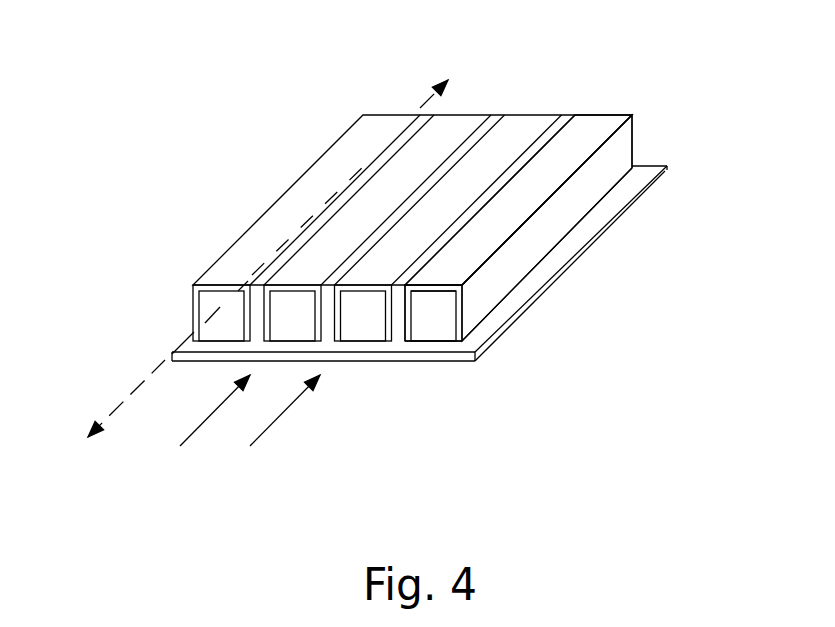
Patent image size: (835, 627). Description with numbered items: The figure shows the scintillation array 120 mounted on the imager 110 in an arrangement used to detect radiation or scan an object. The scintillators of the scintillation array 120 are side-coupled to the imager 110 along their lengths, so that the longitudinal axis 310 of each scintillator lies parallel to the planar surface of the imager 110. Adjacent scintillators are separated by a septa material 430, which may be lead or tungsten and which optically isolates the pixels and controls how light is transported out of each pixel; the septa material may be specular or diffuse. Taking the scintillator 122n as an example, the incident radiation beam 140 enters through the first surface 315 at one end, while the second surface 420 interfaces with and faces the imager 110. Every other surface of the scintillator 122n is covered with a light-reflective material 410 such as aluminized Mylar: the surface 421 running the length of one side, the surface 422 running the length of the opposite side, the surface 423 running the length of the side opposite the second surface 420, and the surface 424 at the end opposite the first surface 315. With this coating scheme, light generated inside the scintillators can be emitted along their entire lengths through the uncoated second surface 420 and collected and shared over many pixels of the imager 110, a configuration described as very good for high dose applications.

The scintillation array 120 is at (300, 178).
The longitudinal axis 310 is at (145, 380).
The septa material 430 is at (497, 115).
The scintillator 122n is at (589, 136).
The surface at opposite end of scintillator 424 is at (676, 139).
The surface opposite the second surface 423 is at (520, 222).
The surface opposite the first side surface 422 is at (583, 219).
The imager 110 is at (550, 278).
The light-reflective material 410 is at (465, 265).
The side surface 421 is at (380, 353).
The second surface 420 is at (433, 391).
The first surface 315 is at (404, 382).
The radiation beam 140 is at (211, 481).